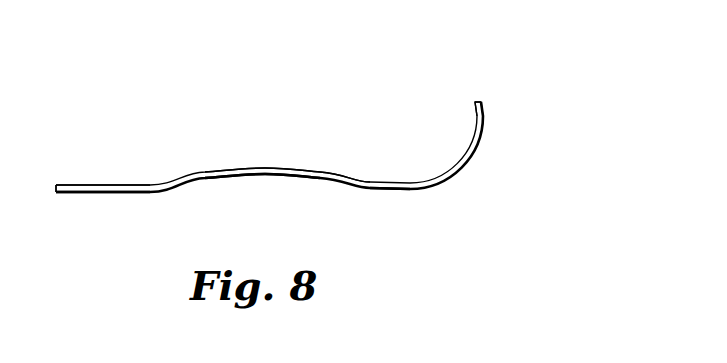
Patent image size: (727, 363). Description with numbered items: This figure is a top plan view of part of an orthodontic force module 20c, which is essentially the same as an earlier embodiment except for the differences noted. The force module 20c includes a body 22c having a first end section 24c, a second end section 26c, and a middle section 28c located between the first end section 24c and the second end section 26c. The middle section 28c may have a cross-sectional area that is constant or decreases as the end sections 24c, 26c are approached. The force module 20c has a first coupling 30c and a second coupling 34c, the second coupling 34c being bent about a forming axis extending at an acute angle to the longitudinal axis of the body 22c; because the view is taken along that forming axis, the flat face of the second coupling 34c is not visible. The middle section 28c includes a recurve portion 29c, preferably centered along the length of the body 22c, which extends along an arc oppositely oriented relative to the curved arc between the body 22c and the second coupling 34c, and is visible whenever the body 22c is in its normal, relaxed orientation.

The orthodontic force module 20c is at (512, 60).
The body 22c is at (340, 165).
The first end section 24c is at (128, 192).
The second end section 26c is at (413, 189).
The middle section 28c is at (266, 168).
The recurve portion 29c is at (287, 175).
The first coupling 30c is at (85, 185).
The second coupling 34c is at (472, 110).